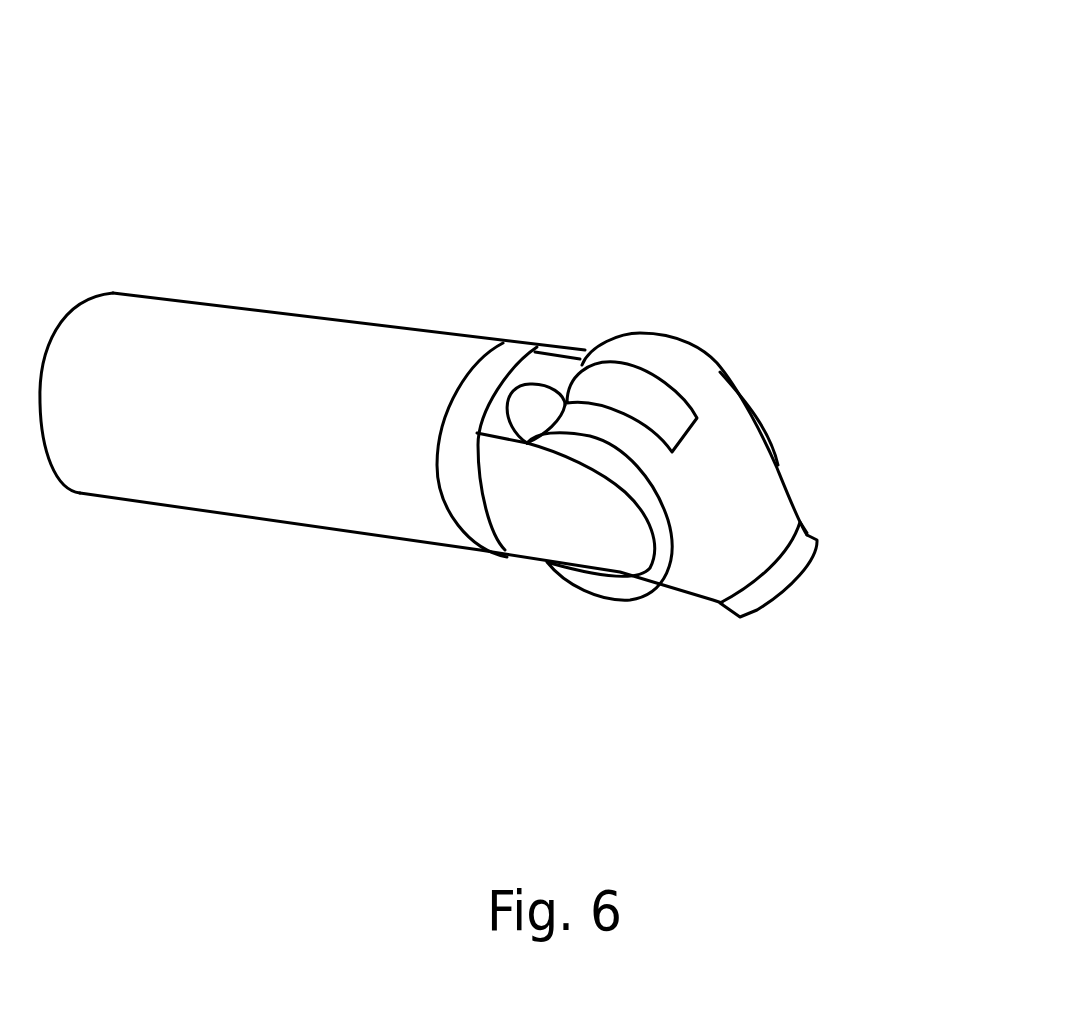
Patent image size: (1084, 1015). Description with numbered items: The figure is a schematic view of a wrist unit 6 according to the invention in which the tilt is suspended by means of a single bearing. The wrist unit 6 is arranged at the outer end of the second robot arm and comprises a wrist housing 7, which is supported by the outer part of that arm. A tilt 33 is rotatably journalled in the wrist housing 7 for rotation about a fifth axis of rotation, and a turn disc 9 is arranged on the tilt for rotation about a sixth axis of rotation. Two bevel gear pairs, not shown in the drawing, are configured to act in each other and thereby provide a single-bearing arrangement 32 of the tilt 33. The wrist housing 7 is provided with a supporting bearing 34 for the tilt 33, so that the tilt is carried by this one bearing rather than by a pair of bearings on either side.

The wrist unit 6 is at (538, 165).
The wrist housing 7 is at (232, 337).
The turn disc 9 is at (803, 548).
The single-bearing arrangement 32 is at (543, 505).
The tilt 33 is at (736, 507).
The supporting bearing 34 is at (755, 418).